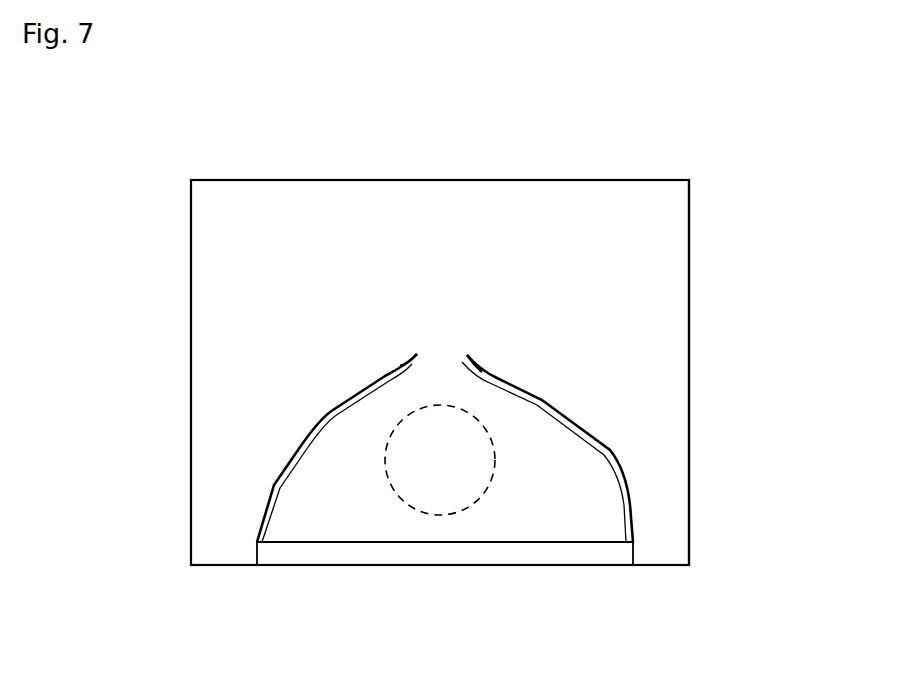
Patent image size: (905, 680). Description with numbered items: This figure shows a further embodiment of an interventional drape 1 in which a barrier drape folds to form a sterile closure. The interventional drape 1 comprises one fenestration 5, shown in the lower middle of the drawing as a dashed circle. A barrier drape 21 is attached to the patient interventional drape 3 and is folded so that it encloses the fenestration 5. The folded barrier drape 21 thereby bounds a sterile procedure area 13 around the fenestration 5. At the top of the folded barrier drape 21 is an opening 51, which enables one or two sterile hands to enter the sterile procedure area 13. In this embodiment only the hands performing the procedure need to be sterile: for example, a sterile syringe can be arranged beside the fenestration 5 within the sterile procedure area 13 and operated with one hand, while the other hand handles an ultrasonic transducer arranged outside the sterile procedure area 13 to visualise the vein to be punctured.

The interventional drape 1 is at (748, 238).
The patient interventional drape 3 is at (690, 370).
The sterile procedure area 13 is at (566, 488).
The opening 51 is at (437, 352).
The barrier drape 21 is at (263, 553).
The fenestration 5 is at (440, 497).